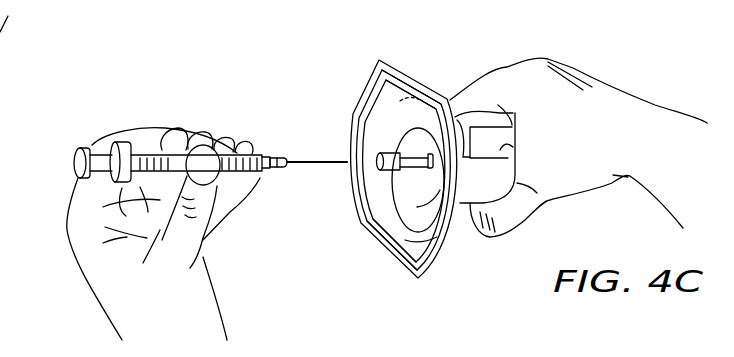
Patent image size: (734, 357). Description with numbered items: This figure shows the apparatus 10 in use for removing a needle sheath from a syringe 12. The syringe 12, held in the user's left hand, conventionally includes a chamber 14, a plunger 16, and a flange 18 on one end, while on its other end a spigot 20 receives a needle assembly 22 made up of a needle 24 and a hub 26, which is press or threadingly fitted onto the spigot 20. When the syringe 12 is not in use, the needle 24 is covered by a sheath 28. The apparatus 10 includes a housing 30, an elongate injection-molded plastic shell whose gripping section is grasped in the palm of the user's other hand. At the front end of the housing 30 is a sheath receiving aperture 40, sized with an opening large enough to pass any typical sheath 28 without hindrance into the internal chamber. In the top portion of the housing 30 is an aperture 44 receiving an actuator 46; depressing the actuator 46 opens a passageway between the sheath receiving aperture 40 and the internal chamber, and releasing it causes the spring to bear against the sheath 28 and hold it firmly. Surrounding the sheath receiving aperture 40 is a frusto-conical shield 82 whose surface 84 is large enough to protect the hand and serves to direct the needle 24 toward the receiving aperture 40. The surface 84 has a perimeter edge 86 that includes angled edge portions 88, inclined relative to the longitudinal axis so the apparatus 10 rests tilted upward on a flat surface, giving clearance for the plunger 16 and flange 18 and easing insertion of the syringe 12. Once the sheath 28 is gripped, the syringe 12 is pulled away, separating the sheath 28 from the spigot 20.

The apparatus 10 is at (443, 186).
The syringe 12 is at (258, 186).
The chamber 14 is at (262, 155).
The plunger 16 is at (92, 145).
The flange 18 is at (115, 143).
The spigot 20 is at (273, 156).
The needle assembly 22 is at (312, 177).
The needle 24 is at (305, 177).
The hub 26 is at (286, 157).
The sheath 28 is at (390, 166).
The housing 30 is at (470, 187).
The sheath receiving aperture 40 is at (424, 160).
The aperture 44 is at (510, 149).
The actuator 46 is at (480, 115).
The shield 82 is at (435, 293).
The surface 84 is at (382, 152).
The perimeter edge 86 is at (405, 273).
The angled edge portions 88 is at (402, 72).